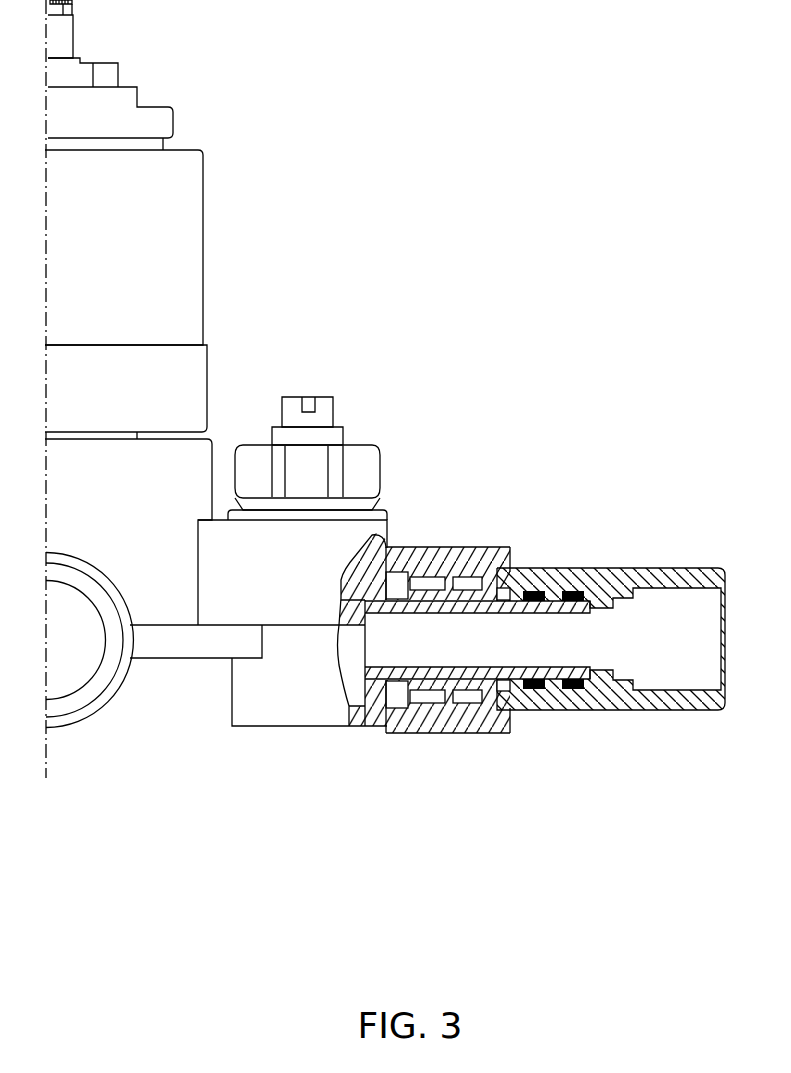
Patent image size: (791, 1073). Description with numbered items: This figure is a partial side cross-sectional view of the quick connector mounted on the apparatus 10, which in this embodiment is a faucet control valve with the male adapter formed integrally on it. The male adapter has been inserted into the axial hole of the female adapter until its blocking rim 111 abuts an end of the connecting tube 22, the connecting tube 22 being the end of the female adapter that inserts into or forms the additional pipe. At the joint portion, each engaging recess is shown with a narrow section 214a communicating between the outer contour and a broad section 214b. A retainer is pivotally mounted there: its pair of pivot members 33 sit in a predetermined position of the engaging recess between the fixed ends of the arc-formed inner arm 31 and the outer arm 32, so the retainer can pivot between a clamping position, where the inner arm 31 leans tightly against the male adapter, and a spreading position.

The apparatus 10 is at (218, 143).
The blocking rim 111 is at (488, 547).
The connecting tube 22 is at (648, 700).
The inner arm 31 is at (420, 585).
The outer arm 32 is at (443, 585).
The pivot members 33 is at (380, 723).
The narrow section 214a is at (505, 555).
The broad section 214b is at (513, 562).